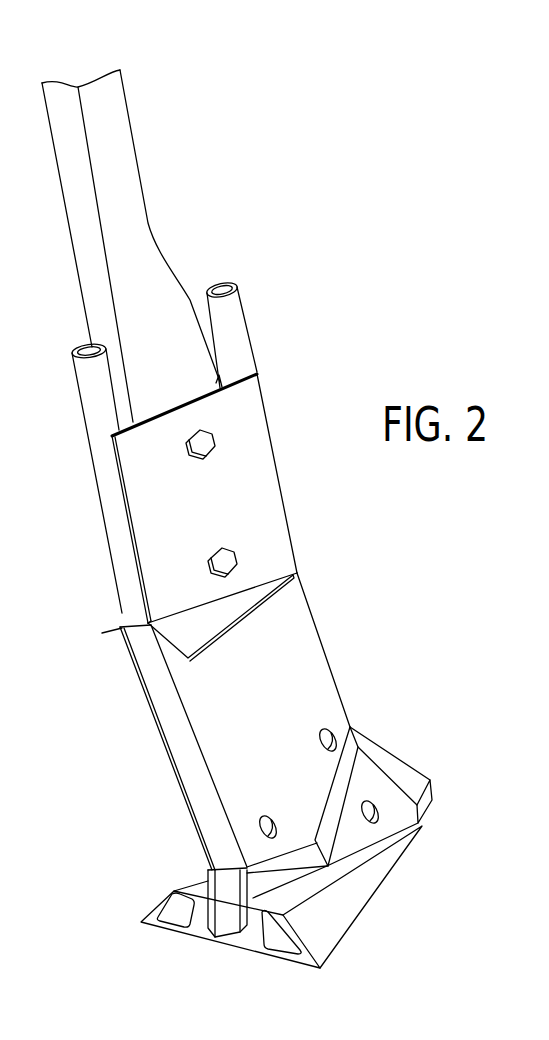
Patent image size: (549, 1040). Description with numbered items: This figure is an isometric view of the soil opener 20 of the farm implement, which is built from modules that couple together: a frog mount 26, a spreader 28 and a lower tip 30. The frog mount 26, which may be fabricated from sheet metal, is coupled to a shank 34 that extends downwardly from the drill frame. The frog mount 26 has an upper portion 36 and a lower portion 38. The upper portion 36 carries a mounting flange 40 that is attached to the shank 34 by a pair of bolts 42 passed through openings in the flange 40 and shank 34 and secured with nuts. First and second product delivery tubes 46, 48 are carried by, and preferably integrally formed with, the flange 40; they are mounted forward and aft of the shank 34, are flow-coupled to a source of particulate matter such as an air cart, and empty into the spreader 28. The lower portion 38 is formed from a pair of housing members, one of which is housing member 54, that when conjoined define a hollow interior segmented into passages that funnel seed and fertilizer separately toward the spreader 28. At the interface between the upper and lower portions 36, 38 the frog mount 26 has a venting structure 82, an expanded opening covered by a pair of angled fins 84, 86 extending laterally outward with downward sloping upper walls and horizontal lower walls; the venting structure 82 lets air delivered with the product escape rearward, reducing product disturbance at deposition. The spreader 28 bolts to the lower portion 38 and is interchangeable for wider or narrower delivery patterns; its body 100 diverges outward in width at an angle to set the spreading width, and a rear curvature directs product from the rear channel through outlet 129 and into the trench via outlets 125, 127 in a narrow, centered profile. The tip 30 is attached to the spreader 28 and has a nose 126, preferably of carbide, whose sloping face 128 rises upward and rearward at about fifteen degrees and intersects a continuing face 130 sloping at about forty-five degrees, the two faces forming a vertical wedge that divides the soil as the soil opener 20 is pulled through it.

The soil opener 20 is at (405, 83).
The shank 34 is at (130, 163).
The first product delivery tube 46 is at (237, 319).
The second product delivery tube 48 is at (88, 383).
The upper portion 36 is at (247, 447).
The mounting flange 40 is at (138, 512).
The bolts 42 is at (210, 452).
The angled fin 86 is at (220, 619).
The angled fin 84 is at (110, 632).
The venting structure 82 is at (161, 650).
The frog mount 26 is at (251, 699).
The lower portion 38 is at (219, 724).
The housing member 54 is at (320, 679).
The lower tip 30 is at (415, 781).
The continuing face 130 is at (420, 771).
The nose 126 is at (433, 797).
The sloping face 128 is at (433, 806).
The outlet 129 is at (230, 916).
The spreader 28 is at (290, 917).
The body 100 is at (363, 891).
The outlet 125 is at (180, 916).
The outlet 127 is at (284, 943).